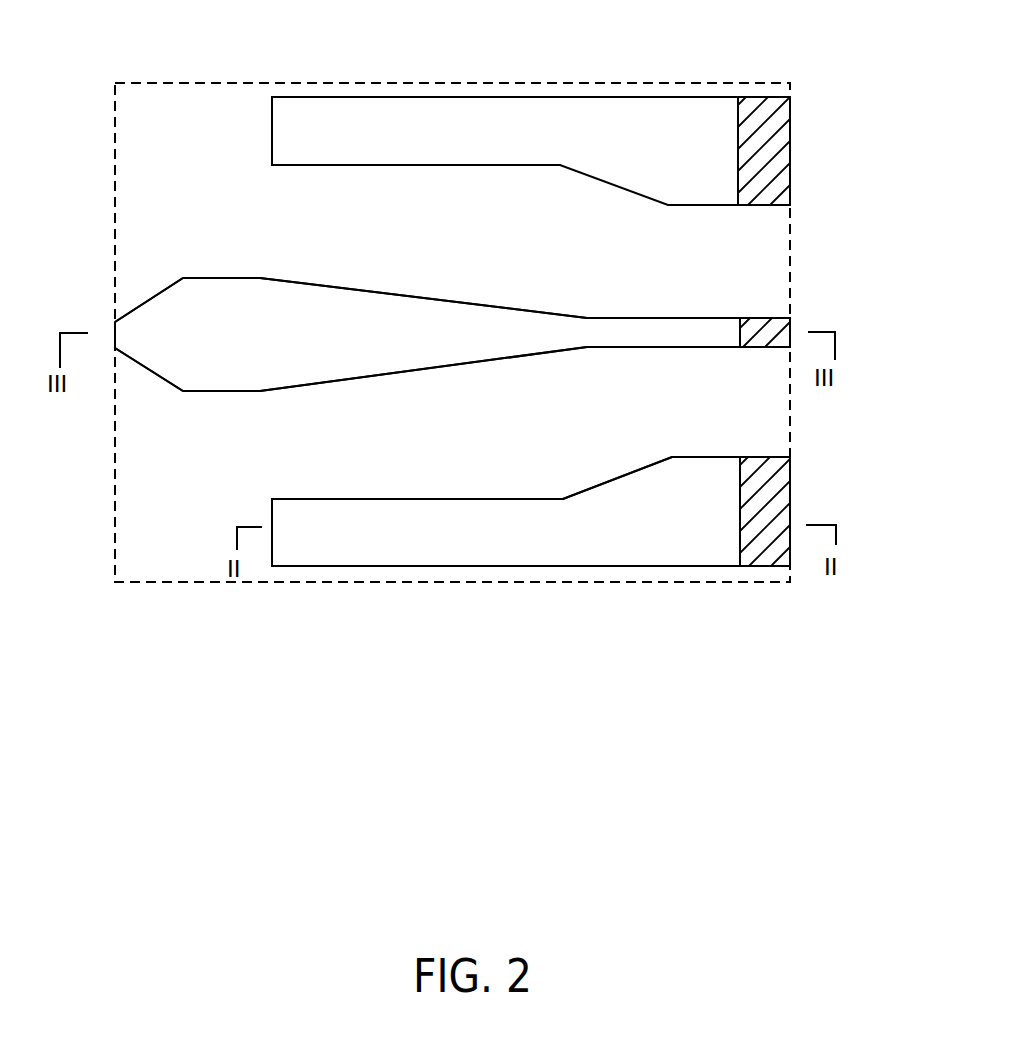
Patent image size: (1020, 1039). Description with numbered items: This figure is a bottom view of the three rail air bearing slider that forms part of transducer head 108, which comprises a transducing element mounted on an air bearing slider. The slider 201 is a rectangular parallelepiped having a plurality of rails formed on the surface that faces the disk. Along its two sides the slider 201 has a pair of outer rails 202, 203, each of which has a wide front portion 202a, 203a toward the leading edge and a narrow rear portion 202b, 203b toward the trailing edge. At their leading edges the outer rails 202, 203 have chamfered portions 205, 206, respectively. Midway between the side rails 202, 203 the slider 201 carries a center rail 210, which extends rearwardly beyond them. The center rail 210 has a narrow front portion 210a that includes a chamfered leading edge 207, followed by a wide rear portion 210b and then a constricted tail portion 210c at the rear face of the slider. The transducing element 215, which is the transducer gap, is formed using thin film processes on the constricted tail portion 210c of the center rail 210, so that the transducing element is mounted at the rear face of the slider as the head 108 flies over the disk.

The transducer head 108 is at (872, 282).
The slider 201 is at (798, 635).
The outer rail 202 is at (793, 167).
The wide front portion 202a is at (790, 83).
The narrow rear portion 202b is at (558, 83).
The outer rail 203 is at (795, 488).
The wide front portion 203a is at (795, 585).
The narrow rear portion 203b is at (558, 585).
The chamfered portion 205 is at (777, 125).
The chamfered portion 206 is at (773, 470).
The chamfered leading edge 207 is at (772, 313).
The center rail 210 is at (510, 305).
The narrow front portion 210a is at (790, 362).
The wide rear portion 210b is at (590, 405).
The constricted tail portion 210c is at (183, 408).
The transducing element 215 is at (113, 332).